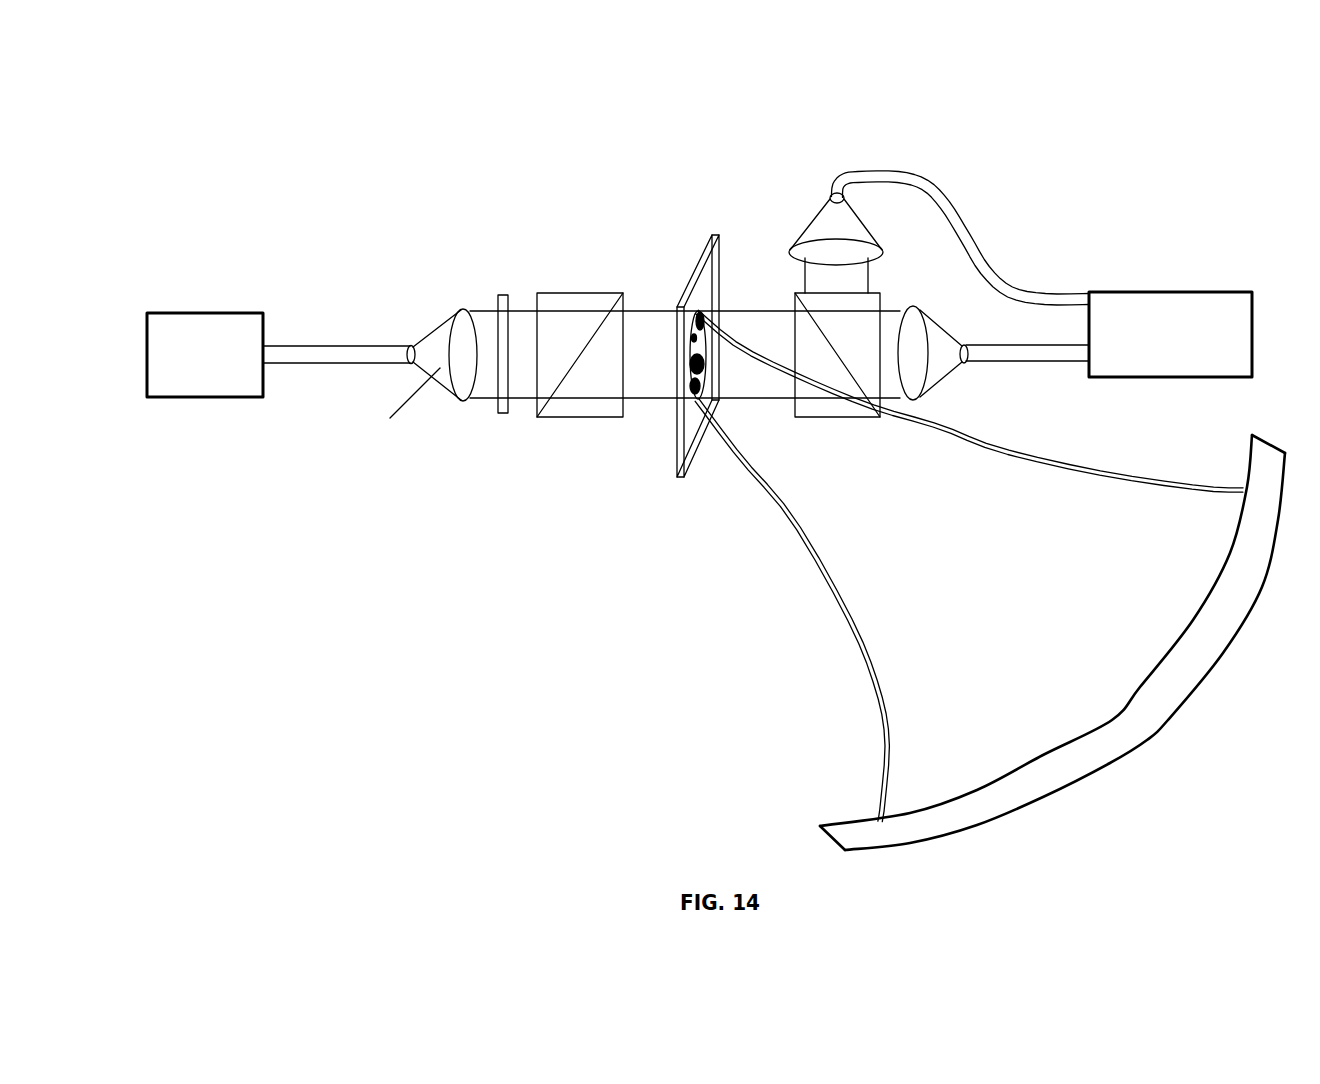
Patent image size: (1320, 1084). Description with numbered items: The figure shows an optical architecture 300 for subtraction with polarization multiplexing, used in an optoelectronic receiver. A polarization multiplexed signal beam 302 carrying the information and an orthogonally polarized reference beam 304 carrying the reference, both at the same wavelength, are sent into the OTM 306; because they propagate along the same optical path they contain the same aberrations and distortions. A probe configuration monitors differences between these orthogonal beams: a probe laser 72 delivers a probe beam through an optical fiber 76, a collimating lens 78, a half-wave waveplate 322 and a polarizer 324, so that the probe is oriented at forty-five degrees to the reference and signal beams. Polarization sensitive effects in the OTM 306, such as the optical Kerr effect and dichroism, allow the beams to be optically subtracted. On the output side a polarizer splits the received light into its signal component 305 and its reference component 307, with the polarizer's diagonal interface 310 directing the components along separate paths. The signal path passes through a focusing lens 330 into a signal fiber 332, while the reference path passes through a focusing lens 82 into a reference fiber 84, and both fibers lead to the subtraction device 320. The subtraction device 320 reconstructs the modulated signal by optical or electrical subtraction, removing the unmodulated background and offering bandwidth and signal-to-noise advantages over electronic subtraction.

The optical architecture 300 is at (745, 109).
The probe laser 72 is at (188, 310).
The optical fiber 76 is at (334, 345).
The collimating lens 78 is at (463, 310).
The λ/2 waveplate 322 is at (503, 418).
The polarizer 324 is at (590, 293).
The OTM 306 is at (692, 428).
The reference component 307 is at (815, 285).
The polarizing beam splitter interface 310 is at (815, 300).
The signal component 305 is at (888, 307).
The focusing lens 330 is at (873, 248).
The signal fiber 332 is at (992, 257).
The focusing lens 82 is at (940, 323).
The reference fiber 84 is at (1000, 342).
The subtraction device 320 is at (1193, 290).
The signal beam 302 is at (970, 437).
The reference beam 304 is at (896, 610).